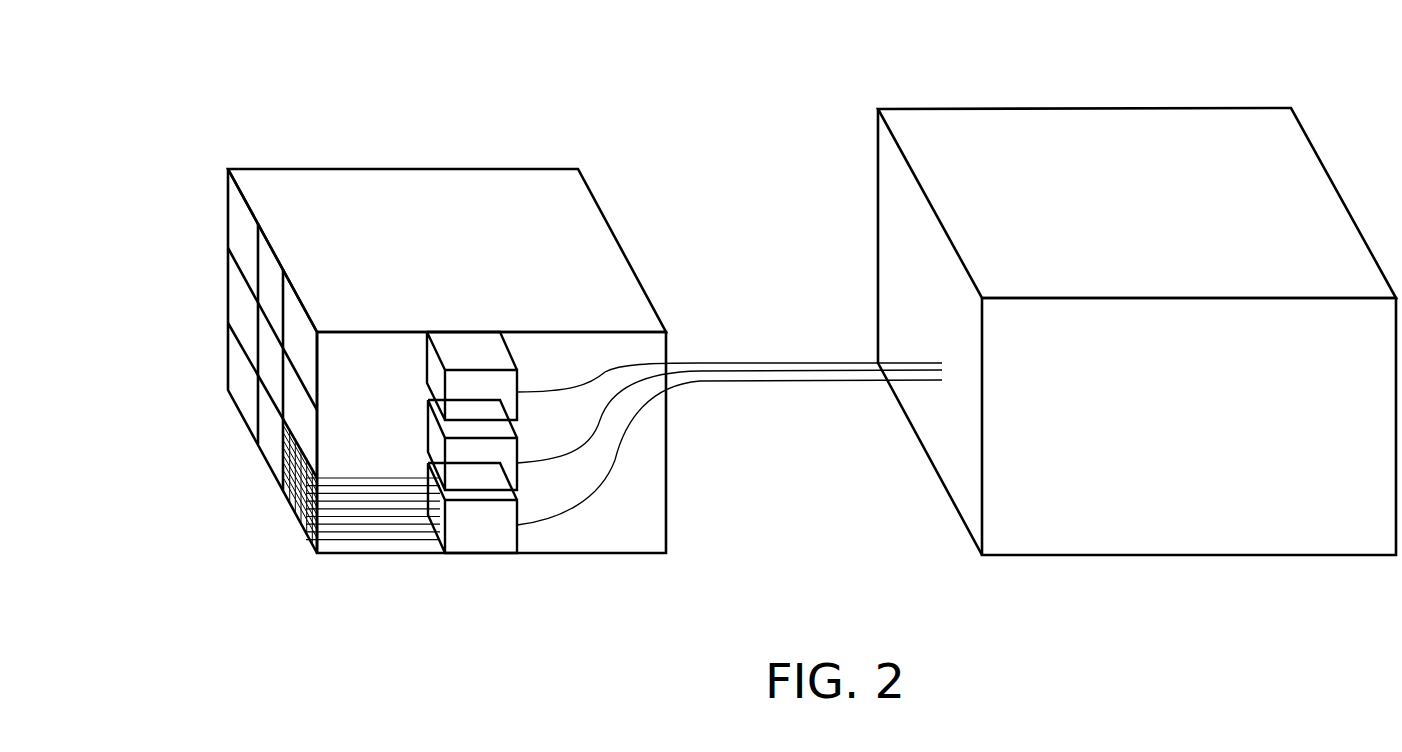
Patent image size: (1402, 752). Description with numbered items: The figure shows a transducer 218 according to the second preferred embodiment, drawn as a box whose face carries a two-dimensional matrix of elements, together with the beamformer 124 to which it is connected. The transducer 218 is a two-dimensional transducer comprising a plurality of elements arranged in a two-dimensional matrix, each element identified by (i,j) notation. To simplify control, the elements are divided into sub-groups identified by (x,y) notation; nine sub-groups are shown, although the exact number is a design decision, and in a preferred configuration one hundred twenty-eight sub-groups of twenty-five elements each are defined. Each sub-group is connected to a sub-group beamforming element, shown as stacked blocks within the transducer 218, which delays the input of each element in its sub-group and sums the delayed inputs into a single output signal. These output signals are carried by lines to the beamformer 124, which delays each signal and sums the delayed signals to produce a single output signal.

The transducer 218 is at (557, 251).
The beamformer 124 is at (1163, 189).